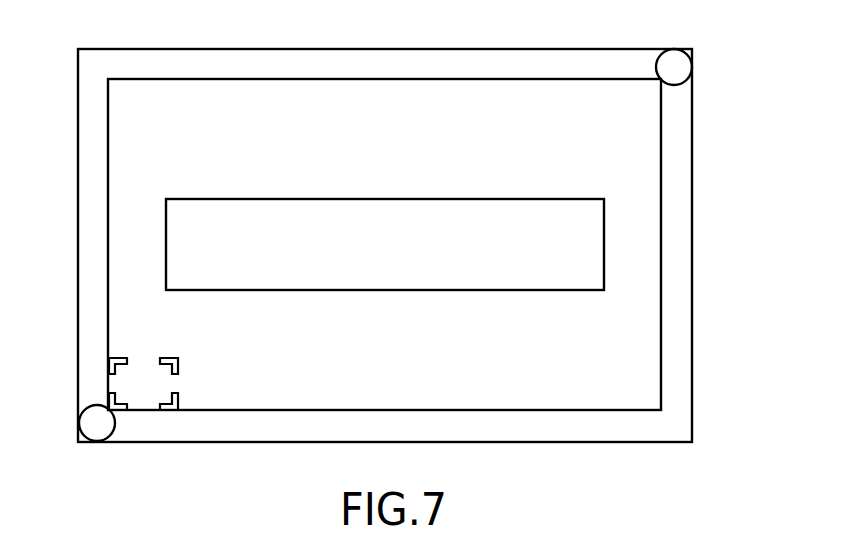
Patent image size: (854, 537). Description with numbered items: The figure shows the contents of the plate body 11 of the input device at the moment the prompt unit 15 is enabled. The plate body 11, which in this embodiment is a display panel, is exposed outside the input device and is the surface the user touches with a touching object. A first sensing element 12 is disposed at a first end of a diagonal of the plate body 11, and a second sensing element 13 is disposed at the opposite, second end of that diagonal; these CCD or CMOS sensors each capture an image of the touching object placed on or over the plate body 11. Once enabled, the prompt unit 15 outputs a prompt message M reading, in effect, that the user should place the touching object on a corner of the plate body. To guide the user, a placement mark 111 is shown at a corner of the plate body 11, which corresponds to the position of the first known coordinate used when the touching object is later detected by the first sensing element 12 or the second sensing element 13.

The prompt unit 15 is at (298, 78).
The plate body 11 is at (488, 95).
The second sensing element 13 is at (677, 65).
The first sensing element 12 is at (91, 424).
The placement mark 111 is at (122, 358).
The prompt message M is at (500, 210).